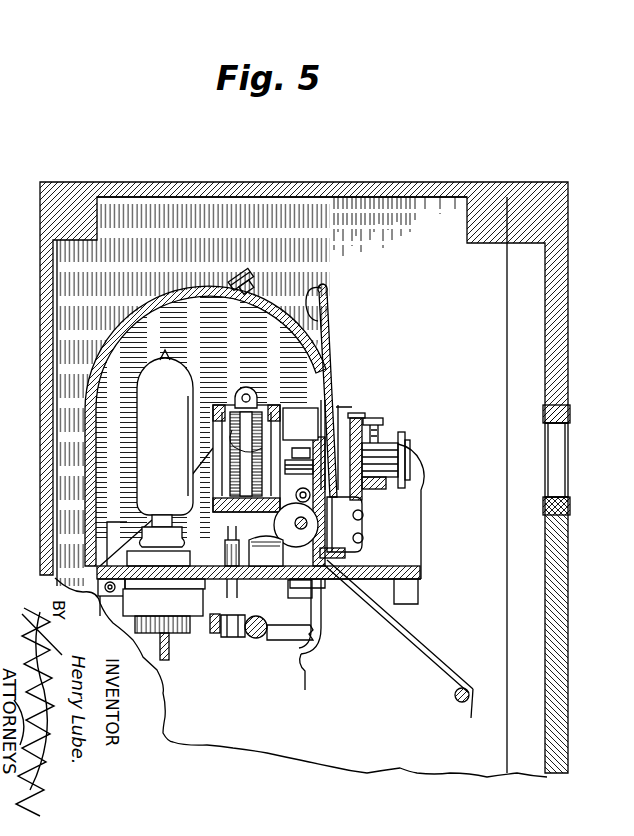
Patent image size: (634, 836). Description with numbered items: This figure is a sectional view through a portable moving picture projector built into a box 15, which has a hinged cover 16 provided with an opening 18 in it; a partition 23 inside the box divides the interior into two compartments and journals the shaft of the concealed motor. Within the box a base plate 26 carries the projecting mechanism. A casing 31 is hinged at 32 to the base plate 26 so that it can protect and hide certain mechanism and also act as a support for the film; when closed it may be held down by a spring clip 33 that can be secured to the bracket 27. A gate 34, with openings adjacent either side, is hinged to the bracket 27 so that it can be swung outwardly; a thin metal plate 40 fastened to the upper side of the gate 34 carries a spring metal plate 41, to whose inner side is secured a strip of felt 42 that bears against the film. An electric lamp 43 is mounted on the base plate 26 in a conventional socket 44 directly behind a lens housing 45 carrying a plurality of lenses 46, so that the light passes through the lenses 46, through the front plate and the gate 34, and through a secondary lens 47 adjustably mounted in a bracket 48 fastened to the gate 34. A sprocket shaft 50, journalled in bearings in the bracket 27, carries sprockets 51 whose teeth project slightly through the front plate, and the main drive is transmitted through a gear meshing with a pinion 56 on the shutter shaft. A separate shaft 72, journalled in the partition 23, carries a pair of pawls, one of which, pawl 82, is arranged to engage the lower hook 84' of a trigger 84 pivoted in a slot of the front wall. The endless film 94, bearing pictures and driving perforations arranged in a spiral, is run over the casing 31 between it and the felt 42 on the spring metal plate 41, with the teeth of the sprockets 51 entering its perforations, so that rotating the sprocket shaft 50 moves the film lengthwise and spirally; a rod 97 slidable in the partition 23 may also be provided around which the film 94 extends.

The box 15 is at (395, 184).
The cover 16 is at (538, 199).
The opening 18 is at (558, 461).
The partition 23 is at (487, 368).
The base plate 26 is at (273, 580).
The bracket 27 is at (402, 544).
The casing 31 is at (97, 495).
The hinge 32 is at (115, 597).
The spring clip 33 is at (273, 307).
The gate 34 is at (340, 513).
The thin metal plate 40 is at (338, 367).
The spring metal plate 41 is at (335, 331).
The strip of felt 42 is at (327, 291).
The electric lamp 43 is at (160, 458).
The socket 44 is at (190, 606).
The lens housing 45 is at (258, 398).
The lenses 46 is at (206, 410).
The secondary lens 47 is at (385, 463).
The bracket 48 is at (354, 414).
The sprocket shaft 50 is at (342, 563).
The sprockets 51 is at (299, 530).
The pinion 56 is at (298, 462).
The shaft 72 is at (255, 639).
The pawl 82 is at (291, 641).
The trigger 84 is at (331, 616).
The lower hook 84' is at (317, 685).
The endless film 94 is at (193, 298).
The rod 97 is at (462, 700).